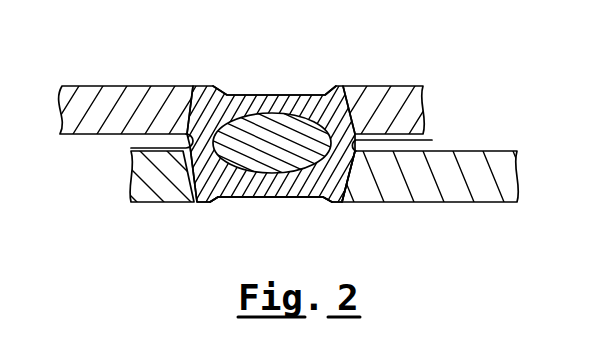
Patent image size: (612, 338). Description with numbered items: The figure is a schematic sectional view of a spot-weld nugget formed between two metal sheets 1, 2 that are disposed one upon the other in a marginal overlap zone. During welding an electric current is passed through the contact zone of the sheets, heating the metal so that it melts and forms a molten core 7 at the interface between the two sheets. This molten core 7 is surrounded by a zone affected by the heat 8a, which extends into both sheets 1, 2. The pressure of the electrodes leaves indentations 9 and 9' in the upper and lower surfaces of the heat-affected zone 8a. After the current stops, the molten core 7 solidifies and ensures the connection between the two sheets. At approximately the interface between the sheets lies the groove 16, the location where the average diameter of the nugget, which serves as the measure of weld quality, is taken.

The sheet 1 is at (131, 86).
The sheet 2 is at (462, 203).
The molten core 7 is at (241, 196).
The zone affected by the heat 8a is at (305, 108).
The indentation 9 is at (272, 120).
The indentation 9' is at (271, 223).
The groove 16 is at (432, 140).